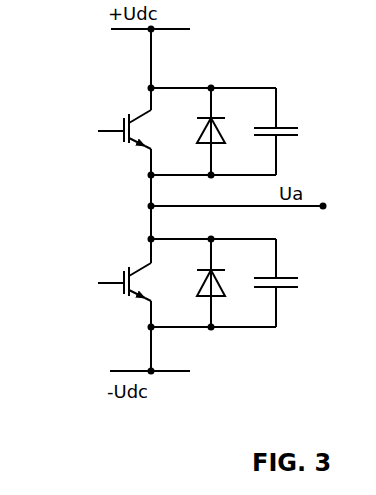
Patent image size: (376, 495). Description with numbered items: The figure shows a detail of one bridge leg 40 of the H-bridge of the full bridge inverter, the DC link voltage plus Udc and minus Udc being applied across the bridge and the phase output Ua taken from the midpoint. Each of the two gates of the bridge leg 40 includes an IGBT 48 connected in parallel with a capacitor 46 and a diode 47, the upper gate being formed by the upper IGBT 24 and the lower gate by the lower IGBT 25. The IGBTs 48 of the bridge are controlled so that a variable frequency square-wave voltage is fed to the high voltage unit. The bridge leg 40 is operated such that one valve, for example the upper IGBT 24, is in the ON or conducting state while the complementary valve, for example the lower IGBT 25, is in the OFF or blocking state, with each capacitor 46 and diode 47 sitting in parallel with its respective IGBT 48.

The bridge leg 40 is at (205, 64).
The upper IGBT 24 is at (112, 130).
The lower IGBT 25 is at (113, 280).
The capacitor 46 is at (283, 123).
The diode 47 is at (222, 288).
The IGBT 48 is at (135, 146).